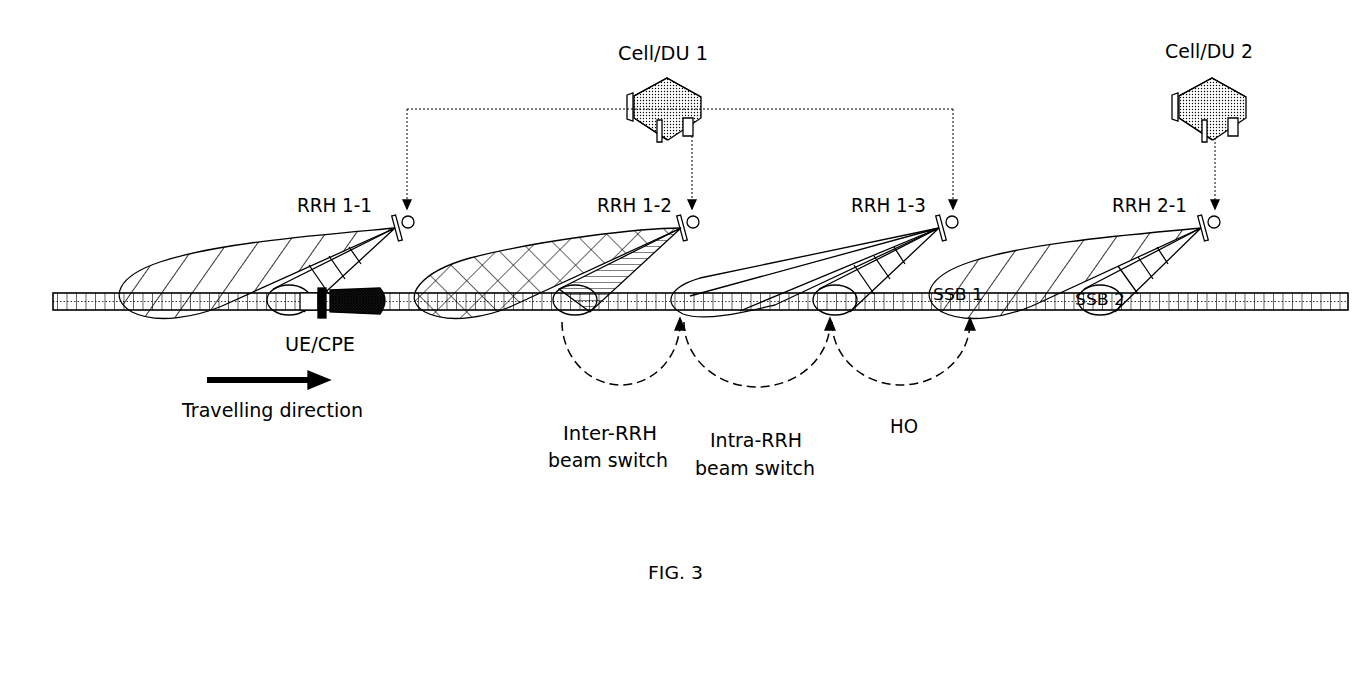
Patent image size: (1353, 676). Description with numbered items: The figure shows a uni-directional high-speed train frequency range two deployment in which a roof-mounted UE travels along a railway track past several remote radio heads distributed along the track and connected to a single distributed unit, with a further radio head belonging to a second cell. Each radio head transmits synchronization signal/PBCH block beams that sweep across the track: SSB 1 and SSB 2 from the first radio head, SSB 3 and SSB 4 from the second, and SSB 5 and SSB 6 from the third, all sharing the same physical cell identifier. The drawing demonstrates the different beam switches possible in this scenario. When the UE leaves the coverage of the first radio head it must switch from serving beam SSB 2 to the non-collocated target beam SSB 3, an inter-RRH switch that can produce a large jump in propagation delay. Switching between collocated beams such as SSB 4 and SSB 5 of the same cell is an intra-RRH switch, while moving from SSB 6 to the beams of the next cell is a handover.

The SSB 1 beam 1 is at (257, 273).
The SSB 2 beam 2 is at (331, 271).
The SSB 3 beam 3 is at (547, 273).
The SSB 4 beam 4 is at (617, 271).
The SSB 5 beam 5 is at (805, 272).
The SSB 6 beam 6 is at (876, 271).